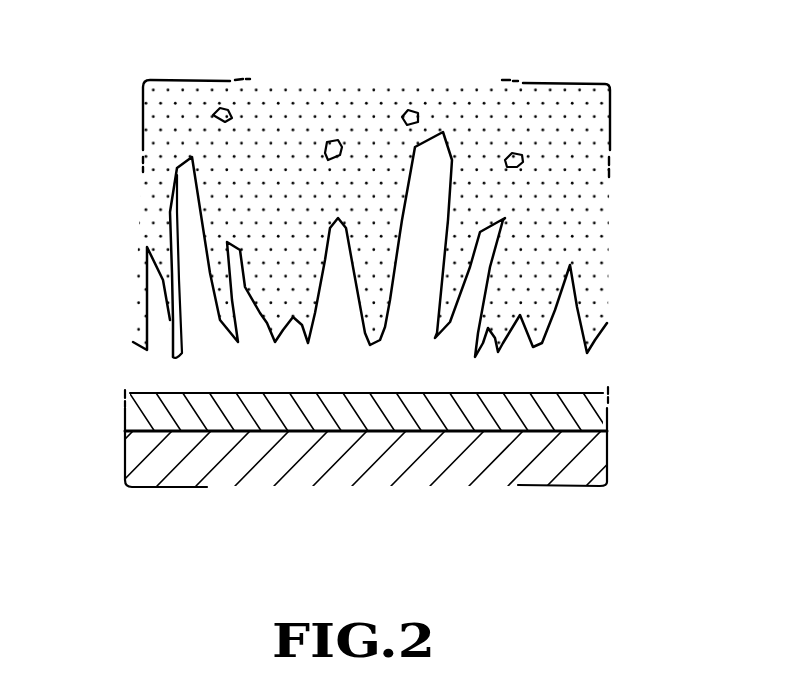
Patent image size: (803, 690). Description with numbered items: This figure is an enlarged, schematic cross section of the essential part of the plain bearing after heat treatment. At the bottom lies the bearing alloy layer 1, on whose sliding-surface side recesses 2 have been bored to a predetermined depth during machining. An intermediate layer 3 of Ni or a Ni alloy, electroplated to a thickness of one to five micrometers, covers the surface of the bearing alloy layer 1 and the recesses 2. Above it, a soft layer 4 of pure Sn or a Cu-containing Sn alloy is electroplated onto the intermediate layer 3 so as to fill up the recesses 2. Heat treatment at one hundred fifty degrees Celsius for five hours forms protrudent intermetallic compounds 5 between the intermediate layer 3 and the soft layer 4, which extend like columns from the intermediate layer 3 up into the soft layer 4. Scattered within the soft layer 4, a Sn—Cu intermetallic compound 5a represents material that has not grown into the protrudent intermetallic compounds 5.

The bearing alloy layer 1 is at (198, 465).
The recesses 2 is at (183, 431).
The intermediate layer 3 is at (552, 417).
The soft layer 4 is at (558, 105).
The protrudent intermetallic compounds 5 is at (435, 152).
The Sn—Cu intermetallic compound 5a is at (226, 108).